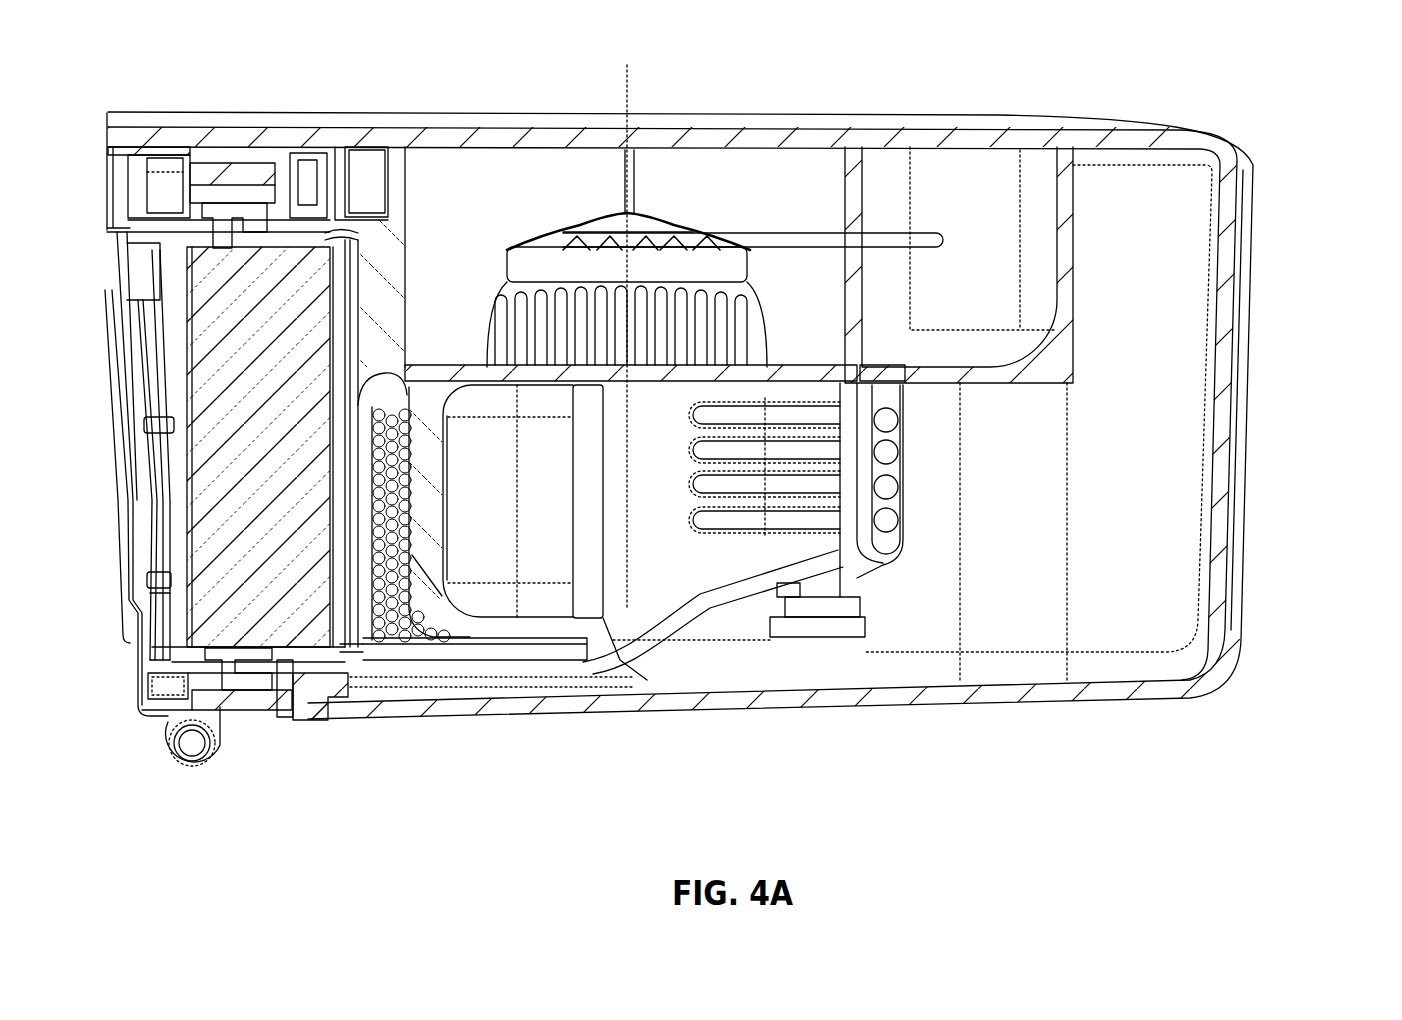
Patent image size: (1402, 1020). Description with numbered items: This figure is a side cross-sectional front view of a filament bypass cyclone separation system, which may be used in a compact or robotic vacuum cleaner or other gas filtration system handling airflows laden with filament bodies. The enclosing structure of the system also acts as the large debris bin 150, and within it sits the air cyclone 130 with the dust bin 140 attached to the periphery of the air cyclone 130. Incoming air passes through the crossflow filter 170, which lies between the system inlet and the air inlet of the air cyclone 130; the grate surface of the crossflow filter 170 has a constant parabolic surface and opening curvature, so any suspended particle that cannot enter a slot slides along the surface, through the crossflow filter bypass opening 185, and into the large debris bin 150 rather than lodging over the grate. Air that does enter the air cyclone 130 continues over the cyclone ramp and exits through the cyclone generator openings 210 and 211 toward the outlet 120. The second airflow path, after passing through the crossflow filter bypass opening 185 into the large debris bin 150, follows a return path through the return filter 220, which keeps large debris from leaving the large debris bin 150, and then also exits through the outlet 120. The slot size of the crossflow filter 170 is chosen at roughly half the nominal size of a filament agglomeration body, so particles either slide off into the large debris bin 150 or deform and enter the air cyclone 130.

The outlet 120 is at (110, 495).
The air cyclone 130 is at (603, 217).
The dust bin 140 is at (1000, 197).
The large debris bin 150 is at (1178, 505).
The crossflow filter 170 is at (797, 527).
The crossflow filter bypass opening 185 is at (903, 518).
The cyclone generator opening 210 is at (507, 278).
The cyclone generator opening 211 is at (690, 222).
The return filter 220 is at (406, 640).